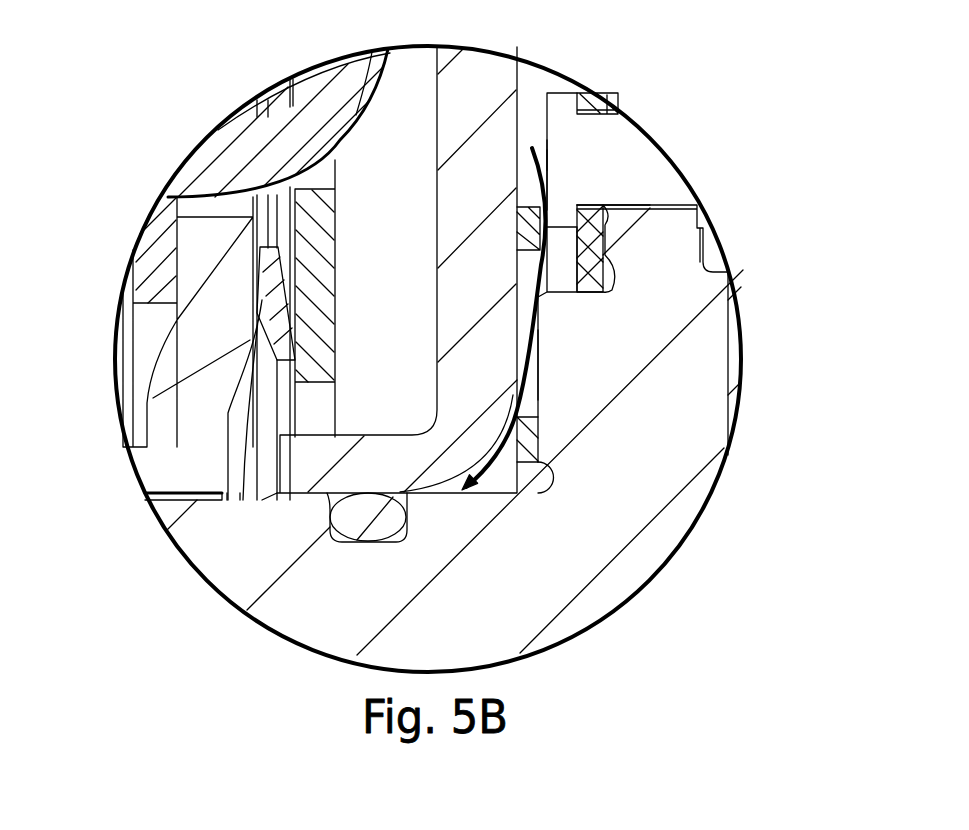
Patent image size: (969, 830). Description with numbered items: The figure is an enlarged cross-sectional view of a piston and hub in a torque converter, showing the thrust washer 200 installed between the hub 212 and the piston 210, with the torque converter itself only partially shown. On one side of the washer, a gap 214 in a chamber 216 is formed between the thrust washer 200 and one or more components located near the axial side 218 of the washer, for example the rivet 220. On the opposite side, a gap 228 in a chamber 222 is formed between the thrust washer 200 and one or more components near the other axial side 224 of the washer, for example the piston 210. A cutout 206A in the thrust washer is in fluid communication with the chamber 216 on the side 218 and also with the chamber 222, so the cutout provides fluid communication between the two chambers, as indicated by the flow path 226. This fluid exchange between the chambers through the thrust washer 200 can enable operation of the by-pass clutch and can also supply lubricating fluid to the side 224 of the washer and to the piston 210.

The thrust washer 200 is at (540, 430).
The cutout 206A is at (547, 385).
The piston 210 is at (310, 465).
The hub 212 is at (343, 607).
The gap 214 is at (557, 206).
The chamber 216 is at (526, 92).
The axial side 218 is at (540, 342).
The rivet 220 is at (578, 130).
The chamber 222 is at (500, 482).
The axial side 224 is at (513, 263).
The flow path 226 is at (543, 158).
The gap 228 is at (517, 410).